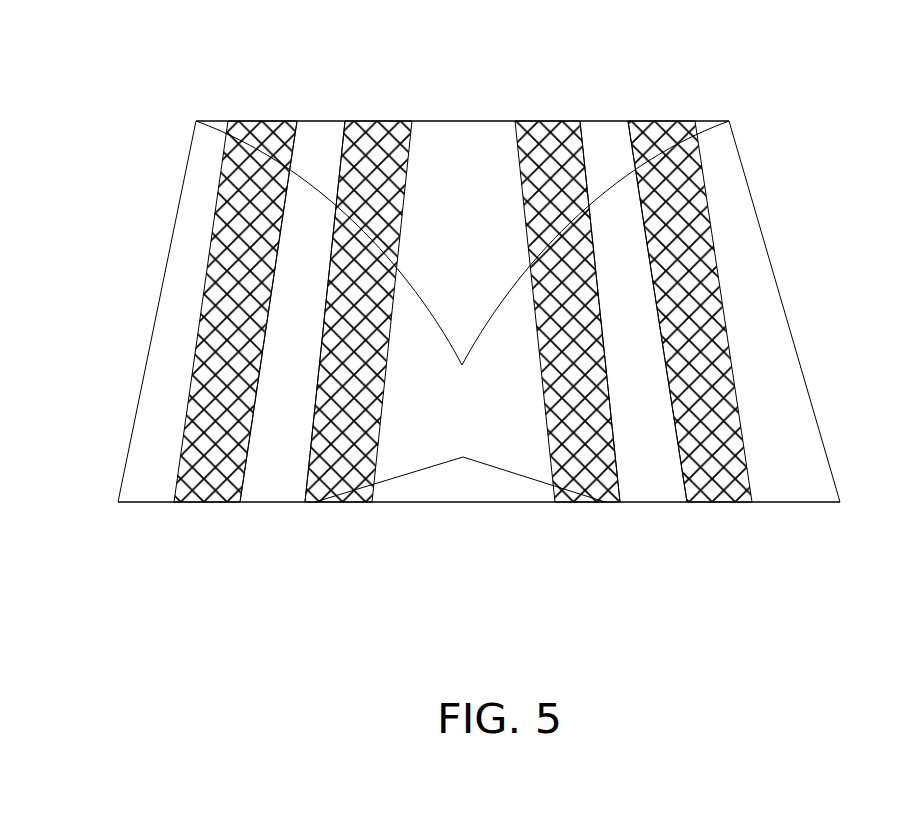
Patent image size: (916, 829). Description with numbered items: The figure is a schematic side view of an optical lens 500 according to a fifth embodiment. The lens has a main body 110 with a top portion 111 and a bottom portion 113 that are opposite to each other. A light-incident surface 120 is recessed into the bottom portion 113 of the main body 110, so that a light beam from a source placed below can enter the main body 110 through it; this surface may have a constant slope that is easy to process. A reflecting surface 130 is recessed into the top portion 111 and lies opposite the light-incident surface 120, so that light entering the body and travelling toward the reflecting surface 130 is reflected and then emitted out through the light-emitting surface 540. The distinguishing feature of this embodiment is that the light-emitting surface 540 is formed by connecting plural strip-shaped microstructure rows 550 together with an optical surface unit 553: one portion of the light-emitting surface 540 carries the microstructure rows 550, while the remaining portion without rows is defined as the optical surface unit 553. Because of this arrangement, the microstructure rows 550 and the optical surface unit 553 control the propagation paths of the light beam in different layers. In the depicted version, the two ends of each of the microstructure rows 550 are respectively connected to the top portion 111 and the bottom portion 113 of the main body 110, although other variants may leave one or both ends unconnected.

The optical lens 500 is at (92, 98).
The main body 110 is at (786, 268).
The top portion 111 is at (622, 120).
The bottom portion 113 is at (796, 504).
The light-incident surface 120 is at (499, 468).
The reflecting surface 130 is at (315, 197).
The light-emitting surface 540 is at (463, 375).
The microstructure rows 550 is at (687, 517).
The optical surface unit 553 is at (633, 343).